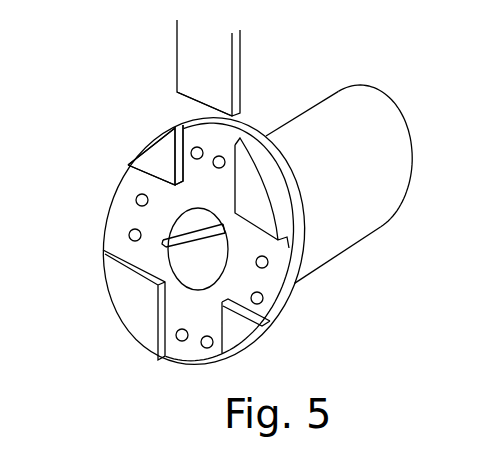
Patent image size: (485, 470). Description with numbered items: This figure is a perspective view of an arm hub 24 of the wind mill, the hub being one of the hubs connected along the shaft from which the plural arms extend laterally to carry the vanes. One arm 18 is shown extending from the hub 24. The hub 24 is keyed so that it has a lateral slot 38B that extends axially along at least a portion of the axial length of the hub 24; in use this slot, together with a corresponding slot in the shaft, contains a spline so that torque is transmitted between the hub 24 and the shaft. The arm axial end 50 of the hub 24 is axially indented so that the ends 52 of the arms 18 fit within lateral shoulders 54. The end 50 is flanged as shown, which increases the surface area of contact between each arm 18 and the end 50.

The arm 18 is at (236, 52).
The arm hub 24 is at (318, 120).
The arm axial end 50 is at (107, 202).
The end of arm 52 is at (190, 97).
The lateral shoulder 54 is at (211, 199).
The lateral slot 38B is at (178, 250).